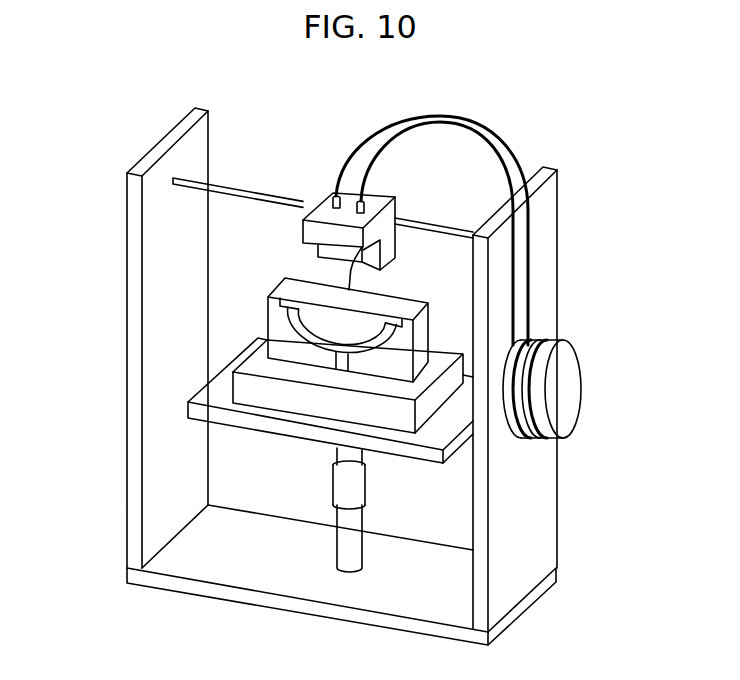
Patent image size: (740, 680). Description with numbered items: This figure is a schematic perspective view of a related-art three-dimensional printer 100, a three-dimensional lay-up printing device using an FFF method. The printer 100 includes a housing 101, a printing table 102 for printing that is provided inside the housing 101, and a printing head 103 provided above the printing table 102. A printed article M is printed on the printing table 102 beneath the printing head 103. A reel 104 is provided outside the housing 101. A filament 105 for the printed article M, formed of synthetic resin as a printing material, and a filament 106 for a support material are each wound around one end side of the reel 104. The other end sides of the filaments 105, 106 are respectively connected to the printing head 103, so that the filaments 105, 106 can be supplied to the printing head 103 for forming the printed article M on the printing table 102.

The 3D printer 100 is at (568, 140).
The housing 101 is at (153, 152).
The printing table 102 is at (259, 424).
The printing head 103 is at (330, 197).
The reel 104 is at (565, 386).
The filament for the printed article 105 is at (532, 253).
The filament for a support material 106 is at (516, 302).
The printed article M is at (263, 284).